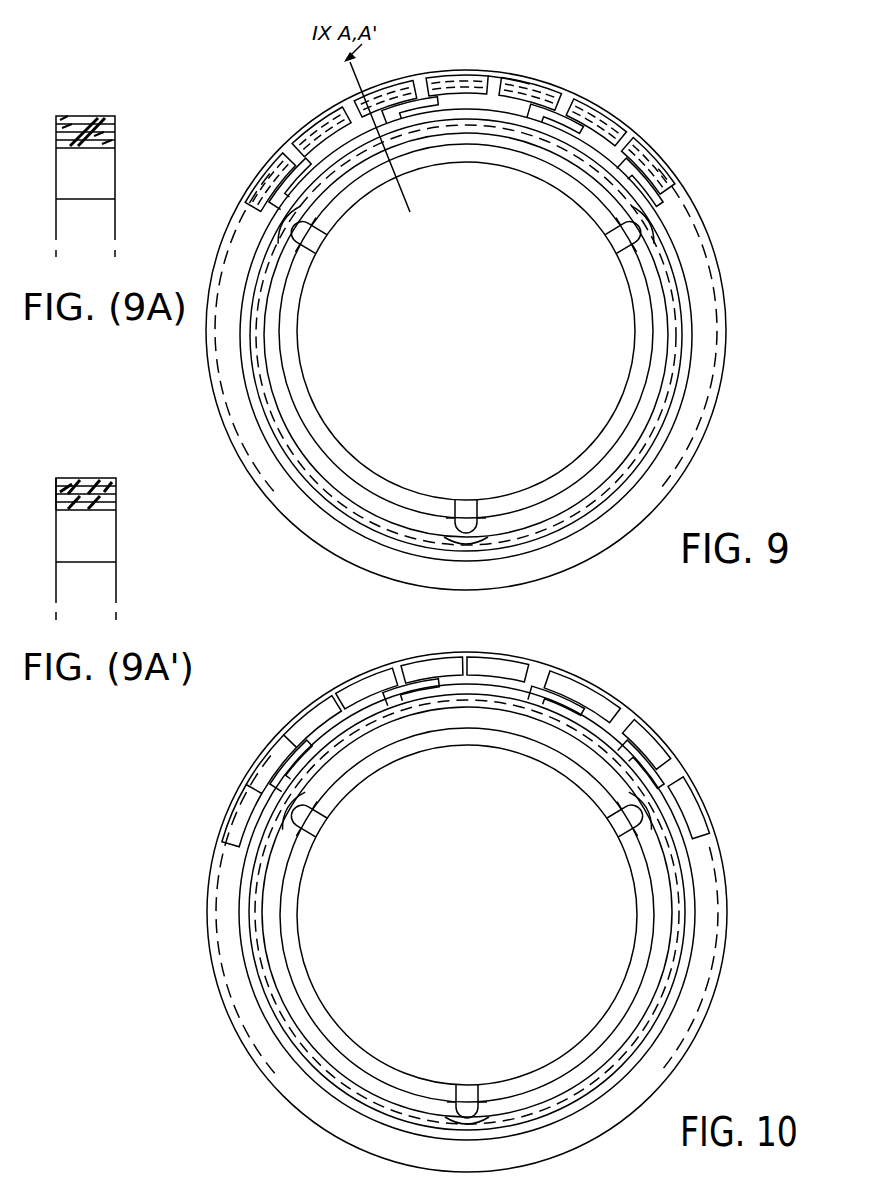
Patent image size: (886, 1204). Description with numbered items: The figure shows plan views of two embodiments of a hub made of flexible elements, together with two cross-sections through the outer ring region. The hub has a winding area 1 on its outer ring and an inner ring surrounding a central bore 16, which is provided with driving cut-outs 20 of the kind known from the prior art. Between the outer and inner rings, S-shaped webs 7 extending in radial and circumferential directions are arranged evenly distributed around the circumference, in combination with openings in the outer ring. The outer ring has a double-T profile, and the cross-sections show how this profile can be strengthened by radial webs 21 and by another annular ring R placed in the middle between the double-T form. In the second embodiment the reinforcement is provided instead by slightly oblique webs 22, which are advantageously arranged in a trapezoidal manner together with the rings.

In FIG. 9, the winding area 1 is at (700, 190).
In FIG. 10, the winding area 1 is at (700, 776).
In FIG. 9, the S-shaped webs 7 is at (512, 118).
In FIG. 10, the S-shaped webs 7 is at (528, 698).
In FIG. 9, the central bore 16 is at (560, 397).
In FIG. 10, the central bore 16 is at (560, 987).
In FIG. 9, the driving cut-outs 20 is at (314, 240).
In FIG. 10, the driving cut-outs 20 is at (314, 822).
In FIG. 9, the radial webs 21 is at (450, 92).
In FIG. 10, the oblique webs 22 is at (600, 710).
In FIG. 9A', the annular ring R is at (52, 492).
In FIG. 9, the annular ring R is at (497, 88).